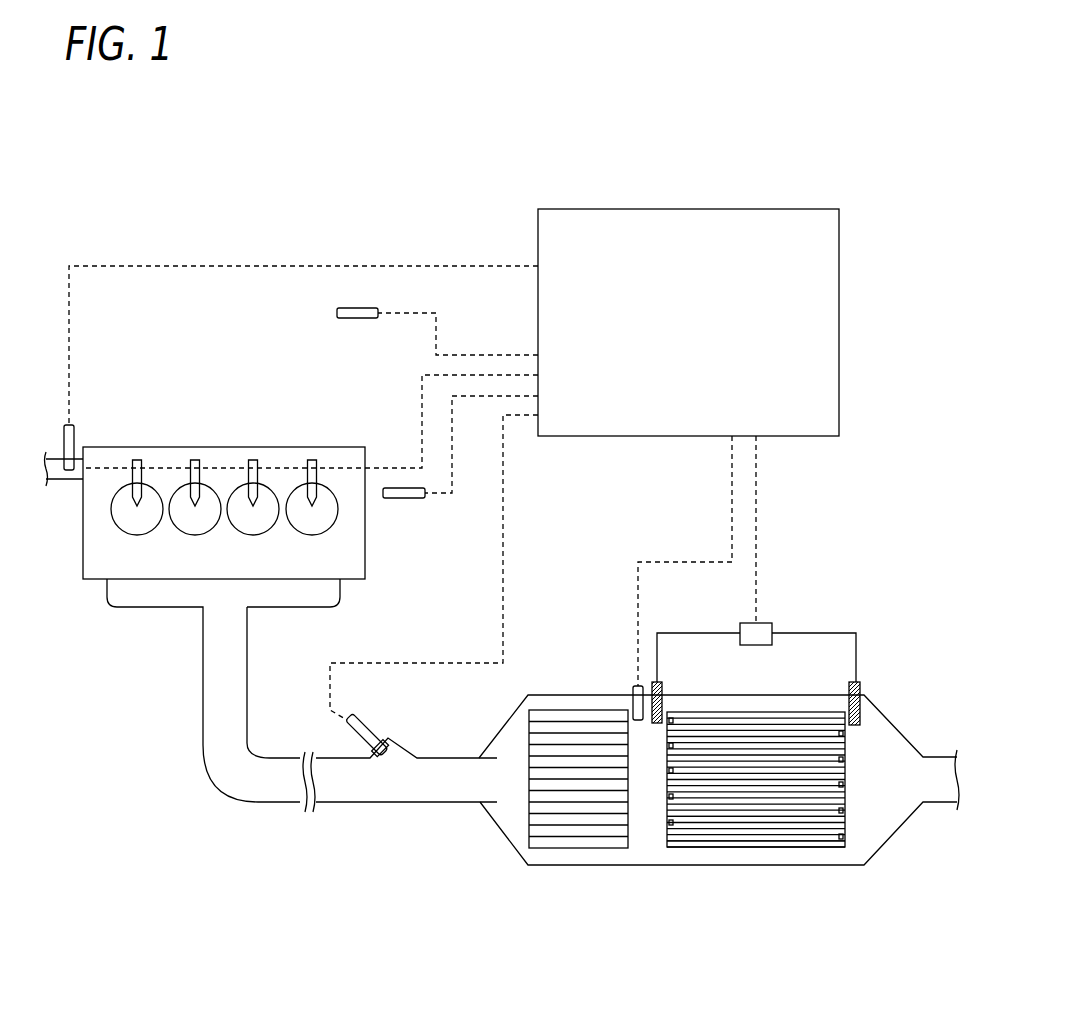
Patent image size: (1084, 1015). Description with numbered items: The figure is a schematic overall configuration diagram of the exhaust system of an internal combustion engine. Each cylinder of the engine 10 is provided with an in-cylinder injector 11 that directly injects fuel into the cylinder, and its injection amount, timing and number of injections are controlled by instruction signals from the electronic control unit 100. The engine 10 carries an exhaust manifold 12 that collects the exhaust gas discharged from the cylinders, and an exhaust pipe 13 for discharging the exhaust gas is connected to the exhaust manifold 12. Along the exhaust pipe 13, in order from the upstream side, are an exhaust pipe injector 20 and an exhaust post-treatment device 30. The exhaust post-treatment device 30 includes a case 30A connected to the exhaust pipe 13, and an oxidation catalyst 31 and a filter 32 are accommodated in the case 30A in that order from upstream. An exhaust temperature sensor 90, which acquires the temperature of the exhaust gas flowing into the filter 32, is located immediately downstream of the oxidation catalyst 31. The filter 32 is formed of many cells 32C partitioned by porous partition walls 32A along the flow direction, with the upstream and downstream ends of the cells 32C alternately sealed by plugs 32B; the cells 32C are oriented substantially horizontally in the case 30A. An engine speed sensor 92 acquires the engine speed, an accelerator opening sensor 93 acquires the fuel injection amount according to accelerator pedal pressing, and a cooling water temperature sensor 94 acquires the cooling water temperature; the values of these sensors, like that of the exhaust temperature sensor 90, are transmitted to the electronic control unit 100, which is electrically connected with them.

The engine 10 is at (224, 472).
The in-cylinder injector 11 is at (130, 464).
The exhaust manifold 12 is at (140, 607).
The exhaust pipe 13 is at (398, 803).
The exhaust pipe injector 20 is at (365, 732).
The exhaust post-treatment device 30 is at (719, 818).
The case 30A is at (608, 867).
The oxidation catalyst 31 is at (562, 849).
The filter 32 is at (802, 827).
The partition wall 32A is at (800, 818).
The plug 32B is at (841, 813).
The cell 32C is at (756, 892).
The exhaust temperature sensor 90 is at (630, 688).
The engine speed sensor 92 is at (405, 498).
The accelerator opening sensor 93 is at (352, 318).
The cooling water temperature sensor 94 is at (75, 437).
The electronic control unit 100 is at (688, 209).